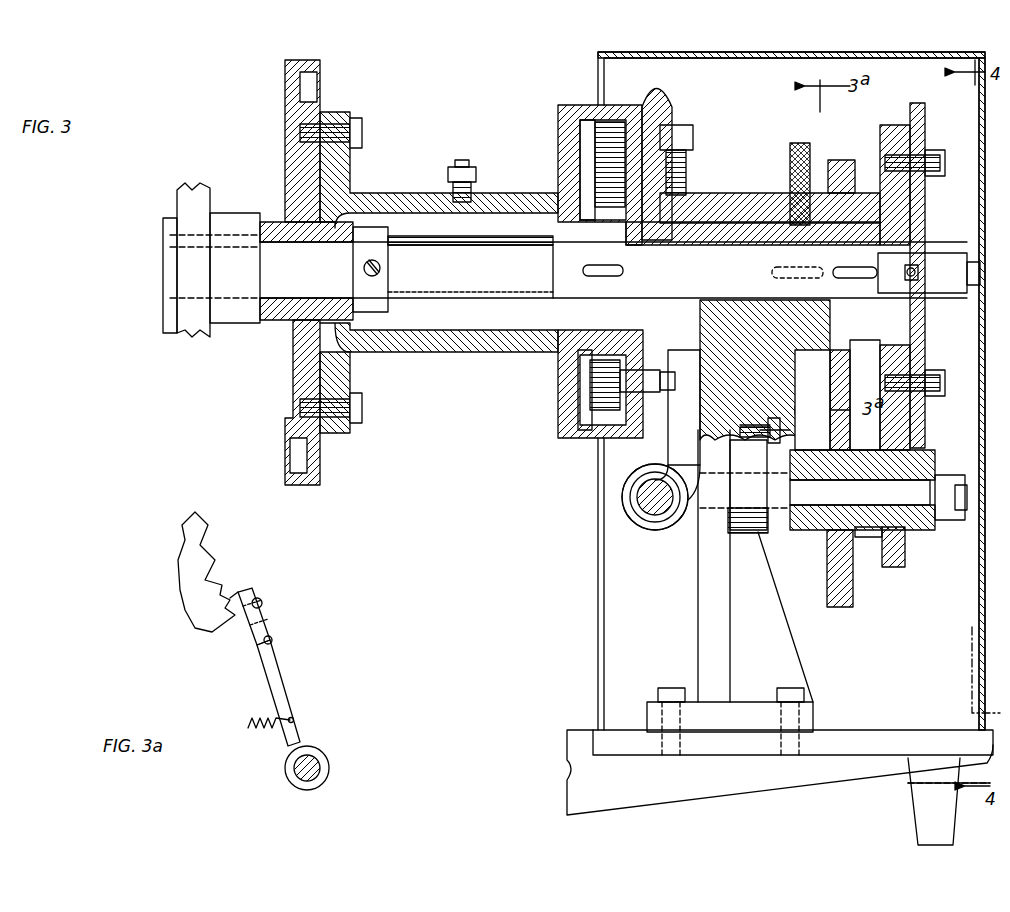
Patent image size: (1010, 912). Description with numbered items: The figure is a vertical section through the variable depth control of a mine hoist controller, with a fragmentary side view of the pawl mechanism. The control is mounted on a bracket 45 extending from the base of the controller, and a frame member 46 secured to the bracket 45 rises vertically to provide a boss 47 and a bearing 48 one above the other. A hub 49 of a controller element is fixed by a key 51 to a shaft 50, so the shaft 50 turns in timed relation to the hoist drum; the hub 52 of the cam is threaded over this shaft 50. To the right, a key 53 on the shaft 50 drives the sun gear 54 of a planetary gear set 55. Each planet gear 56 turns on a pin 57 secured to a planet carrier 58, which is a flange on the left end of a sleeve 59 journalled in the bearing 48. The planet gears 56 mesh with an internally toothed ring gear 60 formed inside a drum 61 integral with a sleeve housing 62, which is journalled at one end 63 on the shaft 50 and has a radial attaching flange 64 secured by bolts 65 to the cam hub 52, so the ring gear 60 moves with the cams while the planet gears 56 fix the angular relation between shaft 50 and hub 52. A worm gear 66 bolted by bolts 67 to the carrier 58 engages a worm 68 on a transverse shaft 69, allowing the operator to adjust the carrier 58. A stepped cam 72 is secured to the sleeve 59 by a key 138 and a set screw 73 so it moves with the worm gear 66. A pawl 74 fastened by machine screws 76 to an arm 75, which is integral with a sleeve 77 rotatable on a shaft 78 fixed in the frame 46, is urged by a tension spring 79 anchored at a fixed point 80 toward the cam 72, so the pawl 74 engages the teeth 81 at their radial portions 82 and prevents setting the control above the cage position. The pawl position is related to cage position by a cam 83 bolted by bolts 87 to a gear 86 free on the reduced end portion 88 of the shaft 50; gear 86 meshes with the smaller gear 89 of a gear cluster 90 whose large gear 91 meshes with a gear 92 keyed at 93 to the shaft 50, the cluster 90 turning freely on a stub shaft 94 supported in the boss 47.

In FIG. 3, the bracket 45 is at (578, 752).
In FIG. 3, the frame member 46 is at (712, 605).
In FIG. 3, the boss 47 is at (753, 538).
In FIG. 3, the bearing 48 is at (742, 200).
In FIG. 3, the hub 49 is at (230, 235).
In FIG. 3, the shaft 50 is at (280, 275).
In FIG. 3, the key 51 is at (233, 243).
In FIG. 3, the hub of cam 52 is at (300, 377).
In FIG. 3, the key 53 is at (603, 265).
In FIG. 3, the sun gear 54 is at (540, 228).
In FIG. 3, the planetary gear set 55 is at (583, 148).
In FIG. 3, the planet gear 56 is at (590, 405).
In FIG. 3, the pin 57 is at (600, 378).
In FIG. 3, the planet carrier 58 is at (610, 440).
In FIG. 3, the sleeve 59 is at (680, 230).
In FIG. 3, the ring gear 60 is at (608, 118).
In FIG. 3, the drum 61 is at (558, 125).
In FIG. 3, the sleeve housing 62 is at (470, 185).
In FIG. 3, the end 63 is at (540, 237).
In FIG. 3, the attaching flange 64 is at (348, 380).
In FIG. 3, the bolts 65 is at (362, 133).
In FIG. 3, the worm gear 66 is at (640, 462).
In FIG. 3, the bolts 67 is at (690, 130).
In FIG. 3, the worm 68 is at (625, 528).
In FIG. 3, the shaft 69 is at (640, 500).
In FIG. 3, the stepped cam 72 is at (800, 147).
In FIG. 3, the set screw 73 is at (795, 352).
In FIG. 3a, the pawl 74 is at (258, 626).
In FIG. 3, the arm 75 is at (790, 433).
In FIG. 3a, the arm 75 is at (282, 680).
In FIG. 3a, the machine screws 76 is at (272, 641).
In FIG. 3, the sleeve 77 is at (918, 520).
In FIG. 3a, the sleeve 77 is at (330, 755).
In FIG. 3, the shaft 78 is at (940, 515).
In FIG. 3a, the shaft 78 is at (320, 772).
In FIG. 3, the tension spring 79 is at (765, 416).
In FIG. 3a, the tension spring 79 is at (255, 716).
In FIG. 3, the fixed point 80 is at (770, 440).
In FIG. 3a, the teeth 81 is at (228, 565).
In FIG. 3a, the radial portions 82 is at (238, 582).
In FIG. 3, the cam 83 is at (920, 130).
In FIG. 3, the gear 86 is at (880, 148).
In FIG. 3, the bolts 87 is at (938, 165).
In FIG. 3, the reduced end portion 88 is at (930, 270).
In FIG. 3, the smaller gear 89 is at (900, 560).
In FIG. 3, the gear cluster 90 is at (880, 537).
In FIG. 3, the large gear 91 is at (827, 583).
In FIG. 3, the gear 92 is at (850, 360).
In FIG. 3, the key 93 is at (850, 267).
In FIG. 3, the stub shaft 94 is at (870, 493).
In FIG. 3, the key 138 is at (775, 270).